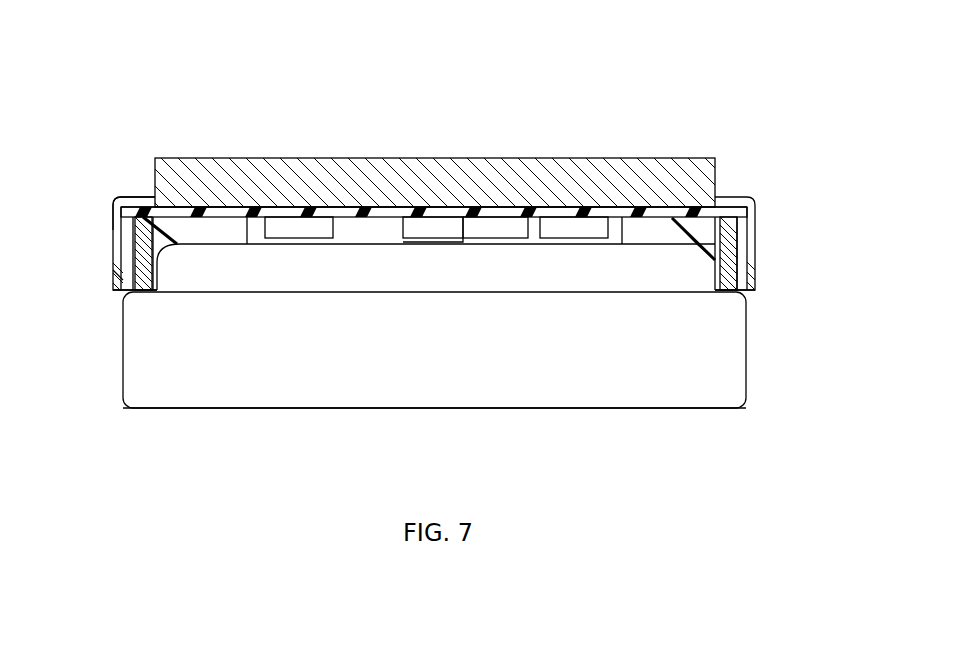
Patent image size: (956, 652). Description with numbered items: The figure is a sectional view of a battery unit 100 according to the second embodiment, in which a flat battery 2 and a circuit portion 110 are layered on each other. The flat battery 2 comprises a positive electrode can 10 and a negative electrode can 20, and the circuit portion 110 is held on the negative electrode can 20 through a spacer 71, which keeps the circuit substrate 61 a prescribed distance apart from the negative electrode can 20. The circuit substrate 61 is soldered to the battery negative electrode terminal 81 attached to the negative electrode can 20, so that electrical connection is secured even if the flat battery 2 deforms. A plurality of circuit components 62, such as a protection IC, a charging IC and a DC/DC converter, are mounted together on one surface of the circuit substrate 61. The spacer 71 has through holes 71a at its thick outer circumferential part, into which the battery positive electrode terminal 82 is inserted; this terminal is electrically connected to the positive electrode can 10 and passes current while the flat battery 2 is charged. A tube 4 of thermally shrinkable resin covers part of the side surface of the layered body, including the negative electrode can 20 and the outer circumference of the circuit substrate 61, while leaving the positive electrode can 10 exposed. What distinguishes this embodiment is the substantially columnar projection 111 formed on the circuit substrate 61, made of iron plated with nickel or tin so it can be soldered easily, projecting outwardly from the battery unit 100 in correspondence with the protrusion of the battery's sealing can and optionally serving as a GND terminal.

The battery unit 100 is at (742, 120).
The circuit portion 110 is at (437, 146).
The projection 111 is at (385, 165).
The spacer 71 is at (180, 225).
The through hole 71a is at (117, 243).
The circuit substrate 61 is at (265, 238).
The circuit component 62 is at (497, 220).
The battery negative electrode terminal 81 is at (440, 220).
The battery positive electrode terminal 82 is at (747, 228).
The tube 4 is at (112, 215).
The negative electrode can 20 is at (692, 264).
The positive electrode can 10 is at (583, 393).
The flat battery 2 is at (418, 410).